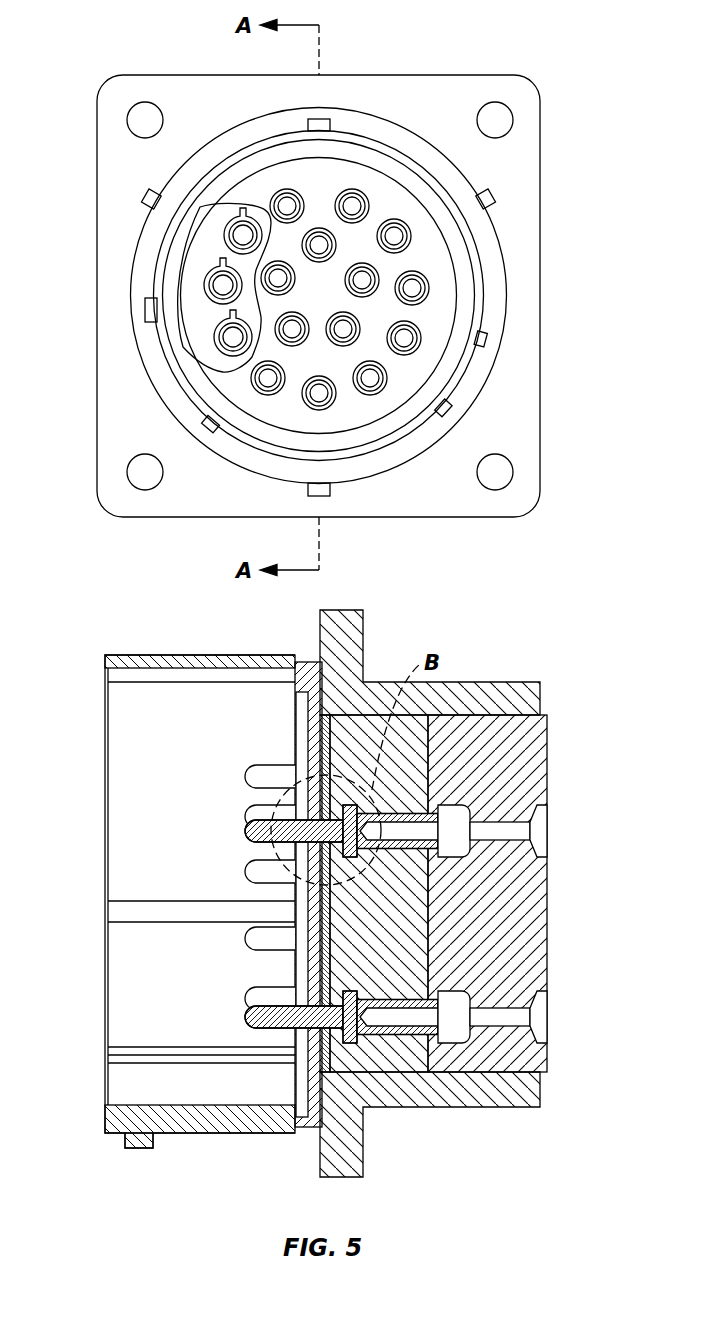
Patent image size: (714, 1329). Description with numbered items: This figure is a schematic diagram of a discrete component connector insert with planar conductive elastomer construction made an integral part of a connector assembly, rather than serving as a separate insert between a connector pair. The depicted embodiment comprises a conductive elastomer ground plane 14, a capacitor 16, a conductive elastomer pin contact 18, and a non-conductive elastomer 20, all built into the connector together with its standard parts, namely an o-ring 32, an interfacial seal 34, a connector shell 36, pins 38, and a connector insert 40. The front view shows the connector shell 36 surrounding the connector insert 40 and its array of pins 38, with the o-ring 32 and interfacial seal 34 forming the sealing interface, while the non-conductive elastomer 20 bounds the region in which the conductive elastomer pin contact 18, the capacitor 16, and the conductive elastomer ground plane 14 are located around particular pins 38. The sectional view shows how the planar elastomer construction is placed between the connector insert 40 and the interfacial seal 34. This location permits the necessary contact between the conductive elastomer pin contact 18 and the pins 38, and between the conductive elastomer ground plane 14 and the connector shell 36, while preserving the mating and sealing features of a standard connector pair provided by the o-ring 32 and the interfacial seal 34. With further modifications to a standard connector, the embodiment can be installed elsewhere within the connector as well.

The conductive elastomer ground plane 14 is at (200, 284).
The capacitor 16 is at (235, 212).
The conductive elastomer pin contact 18 is at (228, 372).
The non-conductive elastomer 20 is at (212, 300).
The o-ring 32 is at (383, 160).
The interfacial seal 34 is at (430, 247).
The connector shell 36 is at (492, 384).
The pins 38 is at (321, 411).
The connector insert 40 is at (397, 1065).